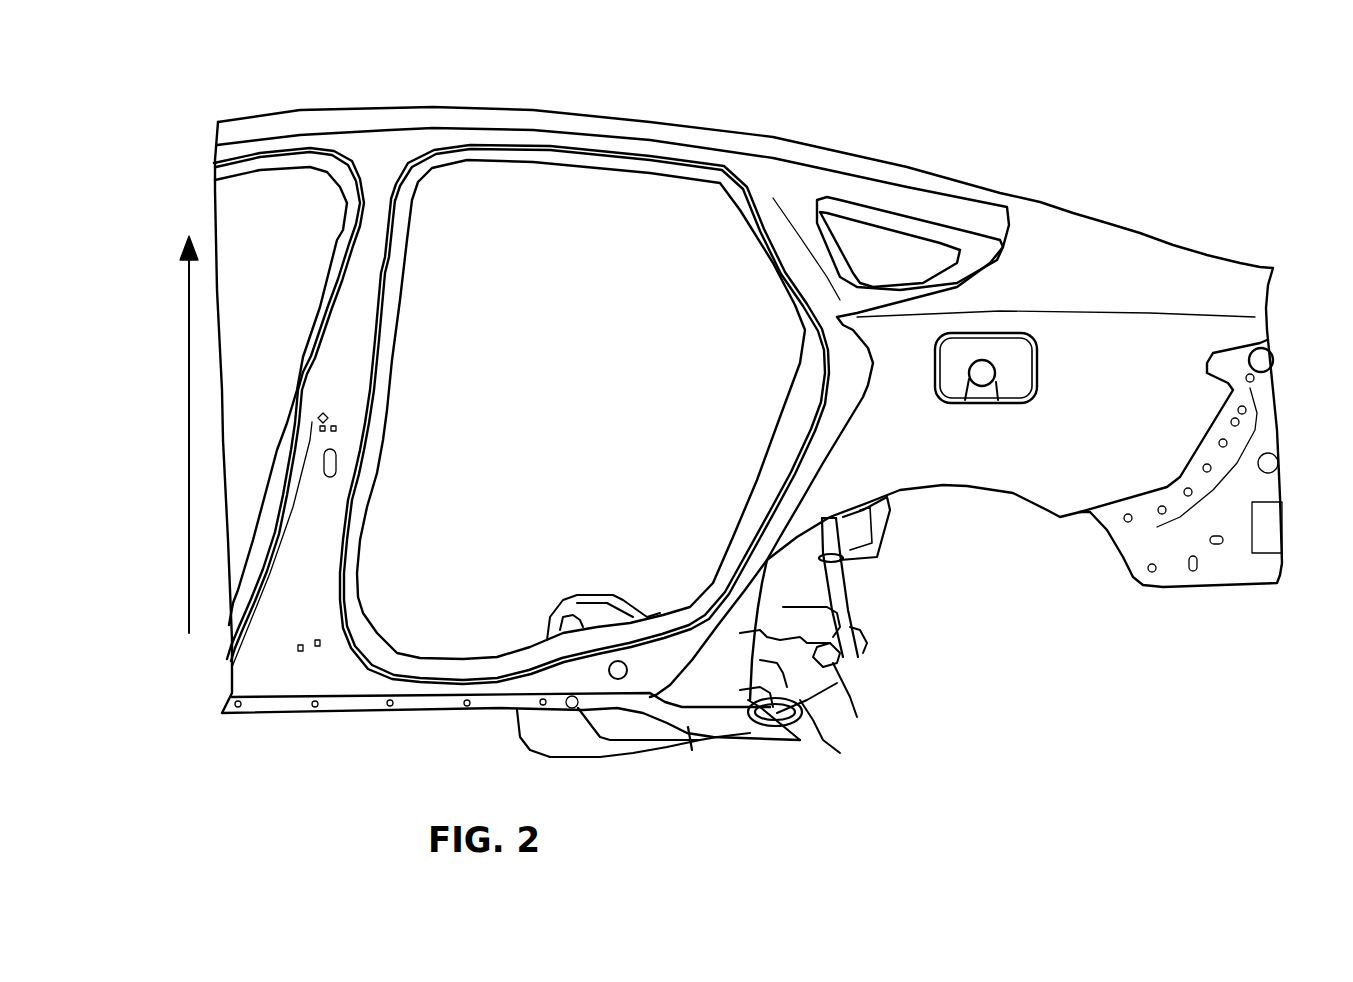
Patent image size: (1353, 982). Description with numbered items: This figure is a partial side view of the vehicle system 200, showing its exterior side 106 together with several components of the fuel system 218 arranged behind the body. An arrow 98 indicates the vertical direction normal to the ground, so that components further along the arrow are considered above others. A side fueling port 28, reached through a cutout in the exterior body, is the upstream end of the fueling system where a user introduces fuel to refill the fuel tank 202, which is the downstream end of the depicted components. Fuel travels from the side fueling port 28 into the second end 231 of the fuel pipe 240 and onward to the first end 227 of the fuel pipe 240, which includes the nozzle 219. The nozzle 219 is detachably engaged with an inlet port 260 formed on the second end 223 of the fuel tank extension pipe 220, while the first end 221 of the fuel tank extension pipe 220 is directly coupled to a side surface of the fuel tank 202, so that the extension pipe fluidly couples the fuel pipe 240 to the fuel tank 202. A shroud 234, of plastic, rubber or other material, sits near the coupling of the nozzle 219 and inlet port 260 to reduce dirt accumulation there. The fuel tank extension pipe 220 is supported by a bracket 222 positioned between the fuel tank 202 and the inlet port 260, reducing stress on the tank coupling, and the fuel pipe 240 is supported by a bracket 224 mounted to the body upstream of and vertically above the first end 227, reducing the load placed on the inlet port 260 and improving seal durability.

The vehicle system 200 is at (1252, 199).
The exterior side 106 is at (1062, 297).
The arrow 98 is at (189, 398).
The side fueling port 28 is at (985, 377).
The second end of fuel pipe 231 is at (973, 398).
The fuel tank 202 is at (673, 727).
The fuel system 218 is at (841, 662).
The fuel pipe 240 is at (837, 591).
The bracket 224 is at (873, 530).
The first end of fuel pipe 227 is at (850, 640).
The shroud 234 is at (842, 645).
The nozzle 219 is at (848, 652).
The inlet port 260 is at (822, 682).
The fuel tank extension pipe 220 is at (826, 680).
The first end of fuel tank extension pipe 221 is at (762, 727).
The bracket 222 is at (807, 712).
The second end of fuel tank extension pipe 223 is at (811, 659).